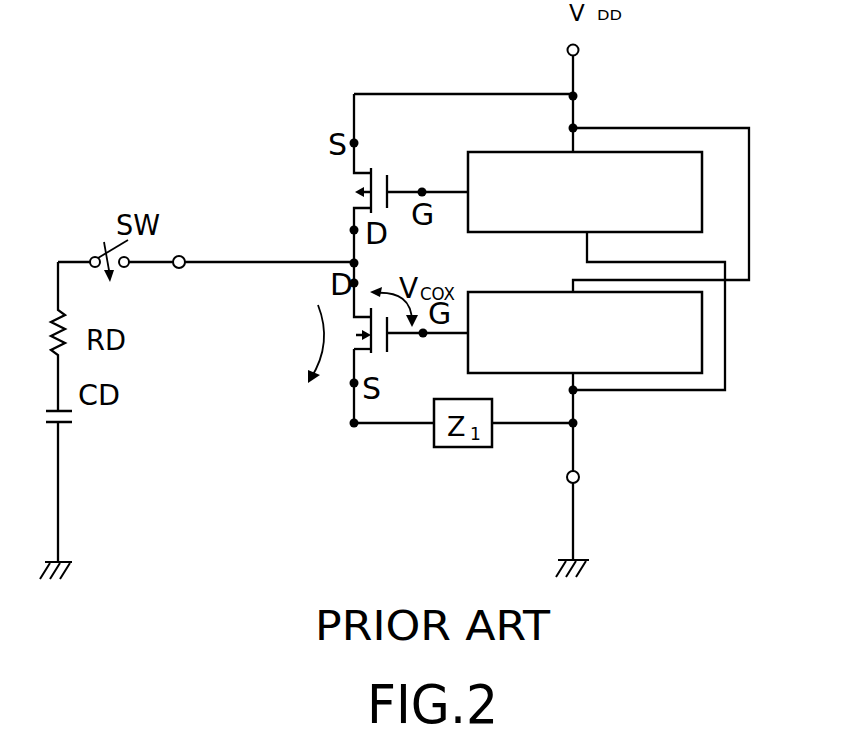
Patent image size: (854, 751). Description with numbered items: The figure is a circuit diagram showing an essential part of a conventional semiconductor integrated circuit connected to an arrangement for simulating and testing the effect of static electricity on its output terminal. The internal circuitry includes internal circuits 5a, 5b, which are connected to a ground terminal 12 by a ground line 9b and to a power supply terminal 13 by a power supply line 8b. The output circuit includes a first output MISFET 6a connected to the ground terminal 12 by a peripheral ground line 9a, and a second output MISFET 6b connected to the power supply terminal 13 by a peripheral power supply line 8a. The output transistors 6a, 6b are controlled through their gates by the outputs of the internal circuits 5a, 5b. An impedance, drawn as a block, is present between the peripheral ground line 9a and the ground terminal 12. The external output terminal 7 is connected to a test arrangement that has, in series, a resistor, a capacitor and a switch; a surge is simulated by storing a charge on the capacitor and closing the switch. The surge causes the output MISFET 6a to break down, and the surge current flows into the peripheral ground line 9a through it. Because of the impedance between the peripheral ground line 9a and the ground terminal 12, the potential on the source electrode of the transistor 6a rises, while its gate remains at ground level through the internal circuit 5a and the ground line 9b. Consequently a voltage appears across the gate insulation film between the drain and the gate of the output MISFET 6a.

The power supply terminal 13 is at (579, 50).
The power supply line 8b is at (573, 96).
The peripheral power supply line 8a is at (354, 94).
The internal circuit 5b is at (474, 152).
The internal circuit 5a is at (476, 292).
The second output MISFET 6b is at (369, 172).
The first output MISFET 6a is at (388, 353).
The external output terminal 7 is at (185, 258).
The peripheral ground line 9a is at (354, 402).
The ground line 9b is at (573, 423).
The ground terminal 12 is at (579, 477).